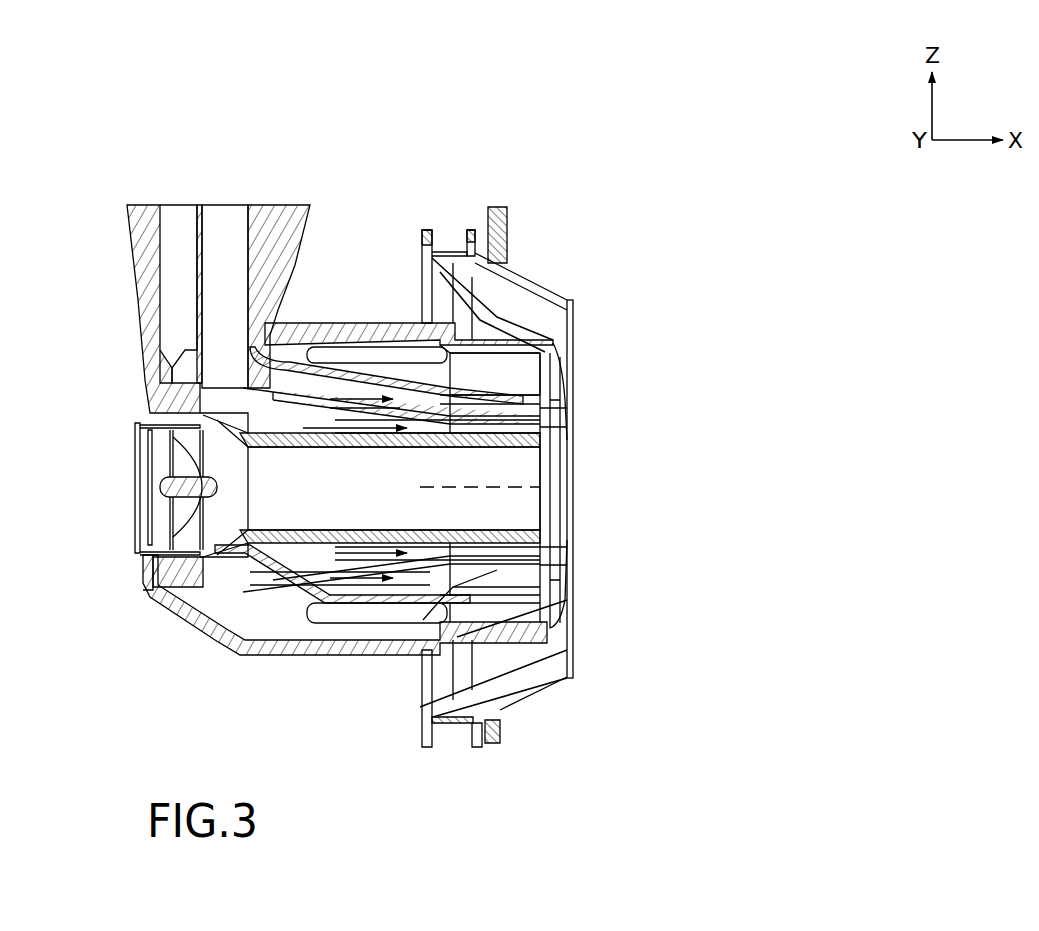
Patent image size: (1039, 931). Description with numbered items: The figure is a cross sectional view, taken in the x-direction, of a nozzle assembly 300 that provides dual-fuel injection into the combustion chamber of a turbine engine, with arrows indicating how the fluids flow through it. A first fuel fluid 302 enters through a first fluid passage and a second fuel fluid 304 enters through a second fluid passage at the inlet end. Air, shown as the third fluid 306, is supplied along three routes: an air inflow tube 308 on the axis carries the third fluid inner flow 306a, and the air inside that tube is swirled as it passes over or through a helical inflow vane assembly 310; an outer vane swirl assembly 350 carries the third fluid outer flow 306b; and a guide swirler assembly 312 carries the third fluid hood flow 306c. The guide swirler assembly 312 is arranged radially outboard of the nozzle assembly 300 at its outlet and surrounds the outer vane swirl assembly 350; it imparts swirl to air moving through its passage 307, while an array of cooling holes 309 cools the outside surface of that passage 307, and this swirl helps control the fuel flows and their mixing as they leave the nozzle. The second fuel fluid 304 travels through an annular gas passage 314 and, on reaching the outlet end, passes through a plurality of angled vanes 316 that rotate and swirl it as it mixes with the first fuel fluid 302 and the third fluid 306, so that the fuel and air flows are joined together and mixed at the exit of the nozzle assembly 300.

The nozzle assembly 300 is at (428, 88).
The first fuel fluid 302 is at (222, 245).
The second fuel fluid 304 is at (178, 290).
The third fluid 306 is at (568, 282).
The third fluid inner flow 306a is at (217, 487).
The third fluid outer flow 306b is at (578, 404).
The third fluid hood flow 306c is at (445, 226).
The passage 307 is at (482, 230).
The air inflow tube 308 is at (132, 426).
The cooling holes 309 is at (500, 253).
The helical inflow vane assembly 310 is at (162, 538).
The guide swirler assembly 312 is at (505, 230).
The annular gas passage 314 is at (272, 372).
The angled vanes 316 is at (484, 452).
The outer vane swirl assembly 350 is at (343, 325).